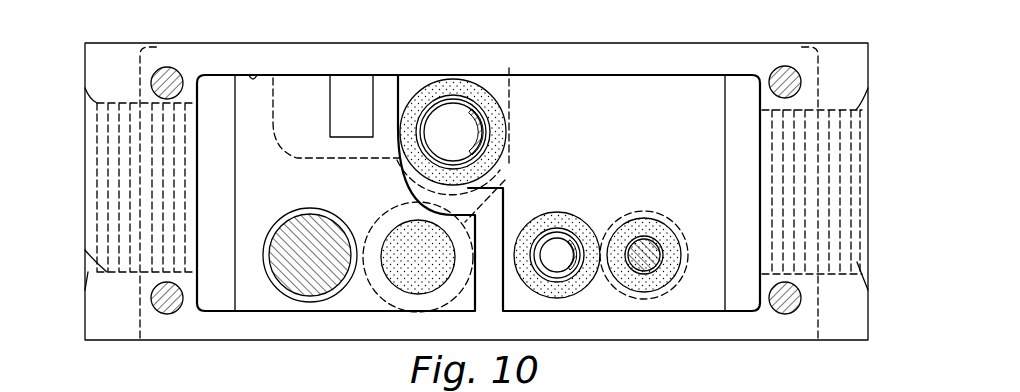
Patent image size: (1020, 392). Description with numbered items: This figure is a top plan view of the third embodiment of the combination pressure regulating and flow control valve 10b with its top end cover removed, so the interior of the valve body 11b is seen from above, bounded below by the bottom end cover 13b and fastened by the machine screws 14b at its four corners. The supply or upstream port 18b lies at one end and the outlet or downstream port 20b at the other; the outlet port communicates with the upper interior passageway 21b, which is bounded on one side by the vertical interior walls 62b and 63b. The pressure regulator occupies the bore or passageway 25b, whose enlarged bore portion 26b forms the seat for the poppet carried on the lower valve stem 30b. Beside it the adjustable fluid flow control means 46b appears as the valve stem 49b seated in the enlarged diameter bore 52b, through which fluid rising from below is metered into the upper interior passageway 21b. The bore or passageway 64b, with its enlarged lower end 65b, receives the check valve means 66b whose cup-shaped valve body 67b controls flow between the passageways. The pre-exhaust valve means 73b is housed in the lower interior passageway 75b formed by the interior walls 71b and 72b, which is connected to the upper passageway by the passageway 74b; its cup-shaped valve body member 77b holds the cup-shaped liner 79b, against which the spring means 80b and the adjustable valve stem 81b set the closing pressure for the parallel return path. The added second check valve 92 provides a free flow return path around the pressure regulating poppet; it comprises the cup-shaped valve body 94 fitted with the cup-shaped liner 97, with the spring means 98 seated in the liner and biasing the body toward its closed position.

The combination pressure regulating and flow control valve 10b is at (217, 42).
The valve body 11b is at (253, 57).
The bottom end cover 13b is at (827, 63).
The machine screws 14b is at (167, 67).
The supply or upstream port 18b is at (857, 262).
The outlet or downstream port 20b is at (86, 250).
The upper interior passageway 21b is at (256, 73).
The bore or passageway 25b is at (658, 224).
The enlarged bore portion 26b is at (673, 236).
The lower valve stem 30b is at (643, 240).
The adjustable fluid flow control means 46b is at (284, 284).
The valve stem 49b is at (288, 232).
The enlarged diameter bore 52b is at (333, 224).
The valve body interior wall 62b is at (388, 157).
The valve body interior wall 63b is at (504, 228).
The bore or passageway 64b is at (422, 288).
The enlarged lower end of bore 65b is at (508, 190).
The check valve means 66b is at (402, 288).
The cup-shaped valve body 67b is at (397, 263).
The interior valve body wall 71b is at (498, 76).
The interior valve body wall 72b is at (362, 170).
The pre-exhaust valve means 73b is at (505, 130).
The passageway 74b is at (333, 78).
The lower interior passageway 75b is at (356, 74).
The cup-shaped valve body member 77b is at (490, 110).
The cup-shaped liner 79b is at (450, 98).
The spring means 80b is at (474, 107).
The adjustable valve stem 81b is at (286, 120).
The second check valve 92 is at (569, 210).
The cup-shaped valve body 94 is at (573, 227).
The cup-shaped liner 97 is at (572, 275).
The spring means 98 is at (556, 272).